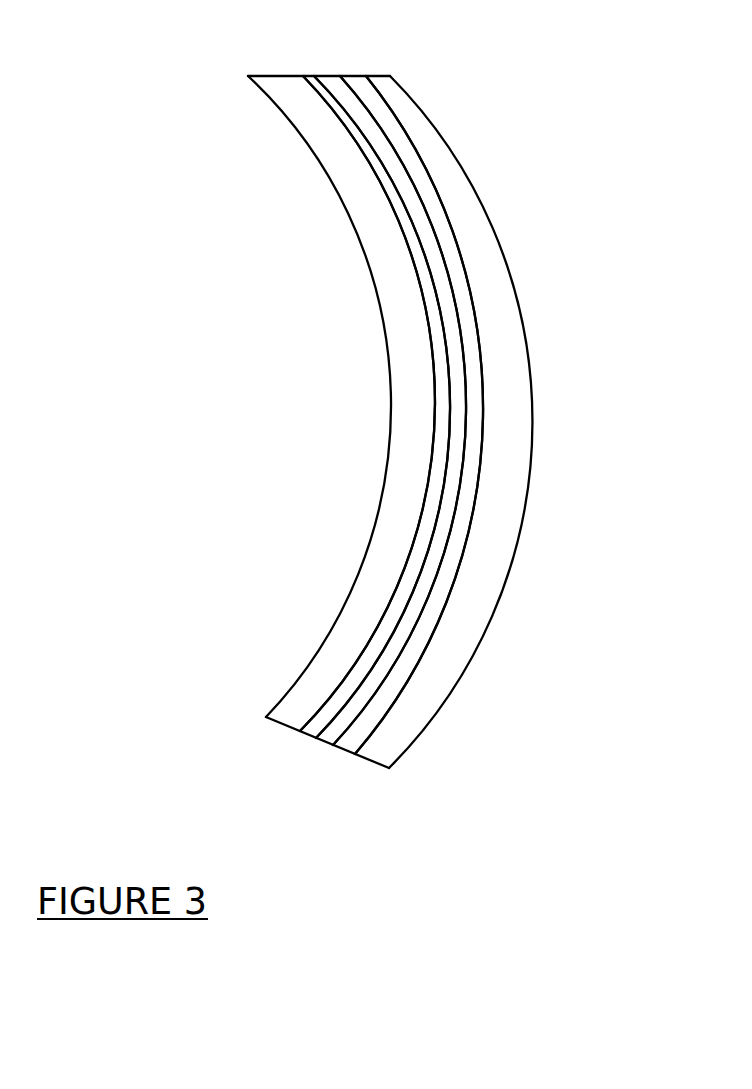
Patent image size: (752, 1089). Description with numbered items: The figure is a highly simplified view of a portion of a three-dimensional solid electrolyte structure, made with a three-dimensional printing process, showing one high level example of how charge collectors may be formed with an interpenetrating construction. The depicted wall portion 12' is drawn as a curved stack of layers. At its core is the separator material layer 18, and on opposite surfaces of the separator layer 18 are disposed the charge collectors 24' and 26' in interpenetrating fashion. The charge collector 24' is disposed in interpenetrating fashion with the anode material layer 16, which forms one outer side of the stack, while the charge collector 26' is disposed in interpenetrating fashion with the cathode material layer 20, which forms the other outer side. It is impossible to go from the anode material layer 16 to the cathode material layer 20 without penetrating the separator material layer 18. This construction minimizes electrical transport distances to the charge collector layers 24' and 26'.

The wall portion 12' is at (342, 390).
The anode material layer 16 is at (365, 235).
The separator material layer 18 is at (448, 324).
The cathode material layer 20 is at (461, 207).
The charge collector 24' is at (362, 407).
The charge collector 26' is at (483, 415).